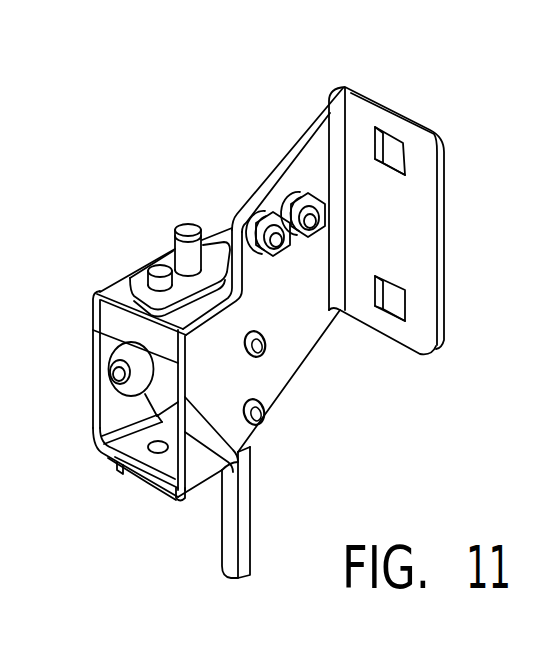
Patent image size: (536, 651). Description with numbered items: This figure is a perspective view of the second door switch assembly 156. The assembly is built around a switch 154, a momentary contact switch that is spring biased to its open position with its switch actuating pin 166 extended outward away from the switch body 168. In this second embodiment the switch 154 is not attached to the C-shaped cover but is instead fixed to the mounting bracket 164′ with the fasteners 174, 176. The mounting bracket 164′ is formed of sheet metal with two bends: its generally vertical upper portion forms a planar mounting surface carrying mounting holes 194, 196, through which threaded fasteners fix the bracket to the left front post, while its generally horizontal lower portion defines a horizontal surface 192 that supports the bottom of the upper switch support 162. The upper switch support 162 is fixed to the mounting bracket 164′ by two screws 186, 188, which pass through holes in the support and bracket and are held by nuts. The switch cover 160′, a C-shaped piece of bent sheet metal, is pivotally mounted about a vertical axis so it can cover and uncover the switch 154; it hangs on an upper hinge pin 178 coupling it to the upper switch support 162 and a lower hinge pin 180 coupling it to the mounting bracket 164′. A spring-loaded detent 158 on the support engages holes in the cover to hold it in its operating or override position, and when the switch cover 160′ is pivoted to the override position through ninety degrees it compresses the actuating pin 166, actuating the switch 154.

The door switch assembly 156 is at (268, 100).
The screw 186 is at (316, 196).
The screw 188 is at (270, 212).
The mounting hole 194 is at (390, 137).
The mounting hole 196 is at (395, 318).
The spring-loaded detent 158 is at (186, 224).
The upper hinge pin 178 is at (161, 265).
The upper switch support 162 is at (140, 277).
The switch cover 160′ is at (92, 331).
The switch actuating pin 166 is at (113, 376).
The lower hinge pin 180 is at (120, 474).
The horizontal surface 192 is at (147, 486).
The mounting bracket 164′ is at (313, 337).
The fastener 174 is at (266, 350).
The fastener 176 is at (264, 410).
The switch body 168 is at (252, 443).
The switch 154 is at (251, 470).